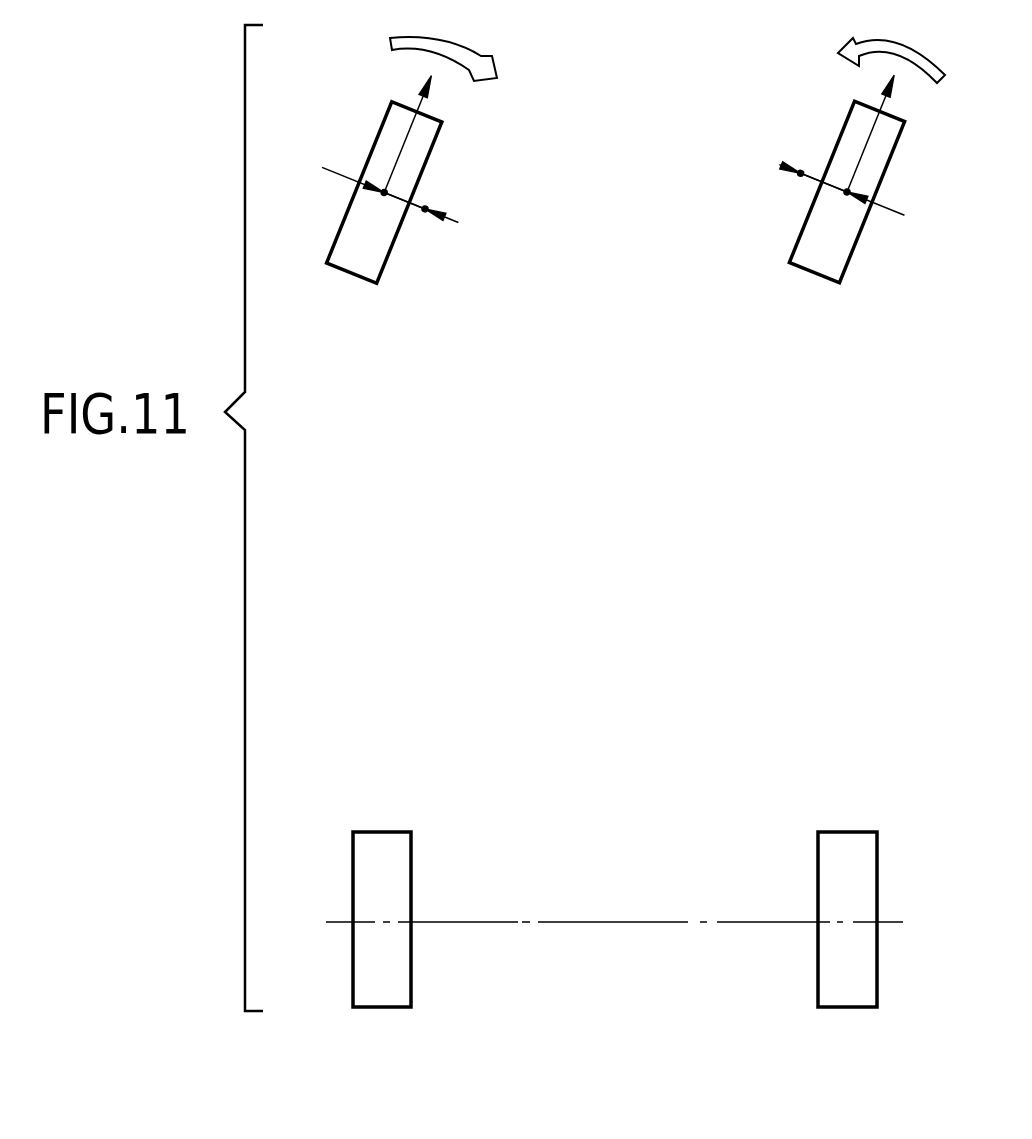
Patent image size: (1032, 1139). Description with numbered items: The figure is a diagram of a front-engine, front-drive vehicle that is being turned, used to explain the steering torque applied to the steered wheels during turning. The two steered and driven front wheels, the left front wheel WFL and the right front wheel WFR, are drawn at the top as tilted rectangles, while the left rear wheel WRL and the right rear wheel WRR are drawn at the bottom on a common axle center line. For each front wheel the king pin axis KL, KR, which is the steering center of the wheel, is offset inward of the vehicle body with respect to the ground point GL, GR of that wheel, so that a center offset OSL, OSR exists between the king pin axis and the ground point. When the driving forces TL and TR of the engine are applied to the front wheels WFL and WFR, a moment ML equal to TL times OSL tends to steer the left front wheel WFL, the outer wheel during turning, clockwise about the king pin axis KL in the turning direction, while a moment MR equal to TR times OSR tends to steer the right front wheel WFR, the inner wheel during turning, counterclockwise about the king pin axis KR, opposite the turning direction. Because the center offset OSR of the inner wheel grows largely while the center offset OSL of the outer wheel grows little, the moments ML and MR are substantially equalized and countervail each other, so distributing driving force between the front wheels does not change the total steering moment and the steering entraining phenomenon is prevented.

The left front wheel WFL is at (360, 270).
The driving force TL is at (421, 134).
The steering moment ML is at (443, 45).
The ground point GL is at (385, 192).
The king pin axis KL is at (426, 208).
The center offset OSL is at (398, 200).
The right front wheel WFR is at (820, 267).
The driving force TR is at (884, 133).
The steering moment MR is at (891, 48).
The ground point GR is at (848, 192).
The king pin axis KR is at (800, 173).
The center offset OSR is at (829, 188).
The left rear wheel WRL is at (395, 837).
The right rear wheel WRR is at (847, 837).